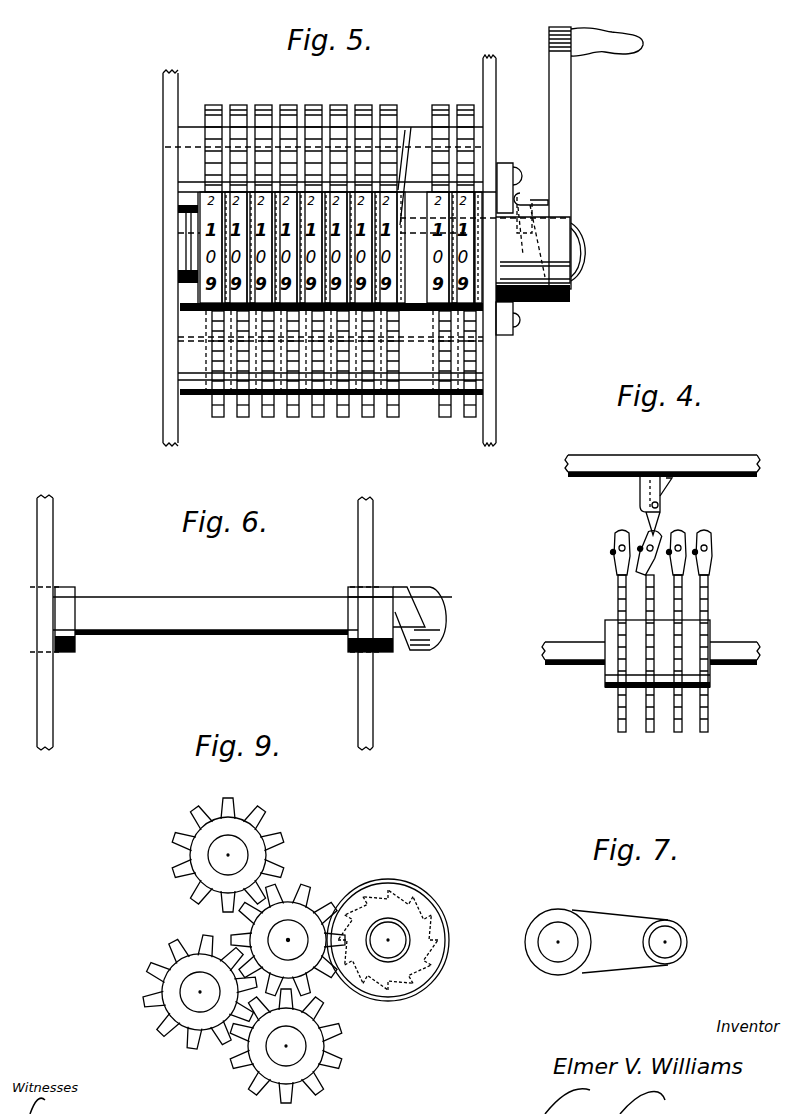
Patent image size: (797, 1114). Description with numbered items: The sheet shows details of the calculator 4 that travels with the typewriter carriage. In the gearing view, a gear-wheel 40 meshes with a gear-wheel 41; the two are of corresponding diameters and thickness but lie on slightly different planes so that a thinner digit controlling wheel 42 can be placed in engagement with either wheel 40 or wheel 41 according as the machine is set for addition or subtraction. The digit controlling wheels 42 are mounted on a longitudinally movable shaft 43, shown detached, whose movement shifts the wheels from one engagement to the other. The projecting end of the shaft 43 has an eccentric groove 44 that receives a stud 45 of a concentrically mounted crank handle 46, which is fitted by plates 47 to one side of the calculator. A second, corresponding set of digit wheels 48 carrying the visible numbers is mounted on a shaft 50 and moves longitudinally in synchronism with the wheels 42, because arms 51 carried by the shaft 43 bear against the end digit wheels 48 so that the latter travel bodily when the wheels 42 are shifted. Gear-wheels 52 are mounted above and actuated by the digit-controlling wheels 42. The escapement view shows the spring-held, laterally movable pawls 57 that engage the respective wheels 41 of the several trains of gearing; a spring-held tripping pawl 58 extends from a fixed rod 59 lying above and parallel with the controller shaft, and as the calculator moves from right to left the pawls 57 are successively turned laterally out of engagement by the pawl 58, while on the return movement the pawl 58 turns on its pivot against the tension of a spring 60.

In FIG. 5, the calculator 4 is at (482, 263).
In FIG. 5, the gear-wheel 40 is at (214, 410).
In FIG. 9, the gear-wheel 40 is at (305, 1046).
In FIG. 4, the gear-wheel 41 is at (705, 625).
In FIG. 9, the gear-wheel 41 is at (200, 991).
In FIG. 9, the digit controlling wheel 42 is at (288, 938).
In FIG. 5, the longitudinally movable shaft 43 is at (584, 257).
In FIG. 6, the longitudinally movable shaft 43 is at (302, 600).
In FIG. 9, the longitudinally movable shaft 43 is at (289, 939).
In FIG. 5, the eccentric groove 44 is at (533, 240).
In FIG. 6, the eccentric groove 44 is at (396, 588).
In FIG. 5, the stud 45 is at (530, 195).
In FIG. 5, the crank handle 46 is at (566, 136).
In FIG. 5, the plate 47 is at (503, 165).
In FIG. 5, the digit wheel 48 is at (180, 282).
In FIG. 9, the digit wheel 48 is at (420, 896).
In FIG. 5, the shaft 50 is at (414, 165).
In FIG. 9, the shaft 50 is at (403, 880).
In FIG. 5, the arm 51 is at (182, 249).
In FIG. 7, the arm 51 is at (622, 908).
In FIG. 5, the gear-wheel 52 is at (370, 118).
In FIG. 9, the gear-wheel 52 is at (270, 826).
In FIG. 5, the escapement pawl 57 is at (528, 301).
In FIG. 4, the escapement pawl 57 is at (620, 570).
In FIG. 4, the tripping pawl 58 is at (668, 485).
In FIG. 4, the fixed rod 59 is at (628, 452).
In FIG. 4, the spring 60 is at (664, 485).